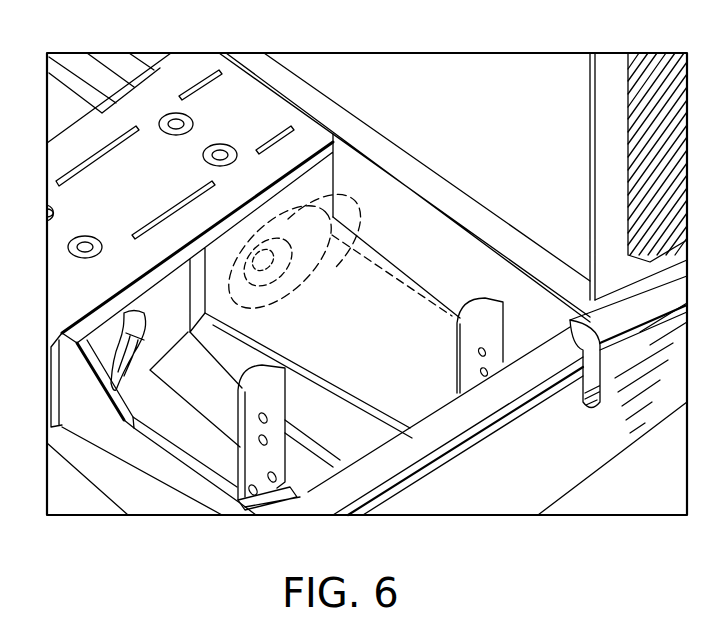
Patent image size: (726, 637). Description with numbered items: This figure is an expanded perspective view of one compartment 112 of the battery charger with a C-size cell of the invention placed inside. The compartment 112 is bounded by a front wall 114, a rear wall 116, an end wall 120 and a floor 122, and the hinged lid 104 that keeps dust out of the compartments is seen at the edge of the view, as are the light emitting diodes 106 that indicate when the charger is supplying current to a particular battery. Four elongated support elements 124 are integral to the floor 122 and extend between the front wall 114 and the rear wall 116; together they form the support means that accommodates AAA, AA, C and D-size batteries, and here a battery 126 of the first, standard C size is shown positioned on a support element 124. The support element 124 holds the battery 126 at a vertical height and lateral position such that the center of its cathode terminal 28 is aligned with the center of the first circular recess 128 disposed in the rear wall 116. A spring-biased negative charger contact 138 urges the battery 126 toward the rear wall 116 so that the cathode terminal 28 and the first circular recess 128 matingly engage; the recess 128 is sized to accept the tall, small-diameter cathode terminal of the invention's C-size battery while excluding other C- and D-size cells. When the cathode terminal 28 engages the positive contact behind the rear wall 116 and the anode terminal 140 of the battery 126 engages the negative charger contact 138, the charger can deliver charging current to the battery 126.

The cathode terminal 28 is at (268, 264).
The hinged lid 104 is at (612, 117).
The light emitting diodes 106 is at (207, 114).
The compartment 112 is at (410, 227).
The front wall 114 is at (328, 474).
The rear wall 116 is at (168, 331).
The end wall 120 is at (478, 257).
The floor 122 is at (343, 411).
The elongated support element 124 is at (165, 404).
The battery 126 is at (332, 292).
The first circular recess 128 is at (250, 257).
The negative charger contact 138 is at (494, 321).
The anode terminal 140 is at (437, 400).